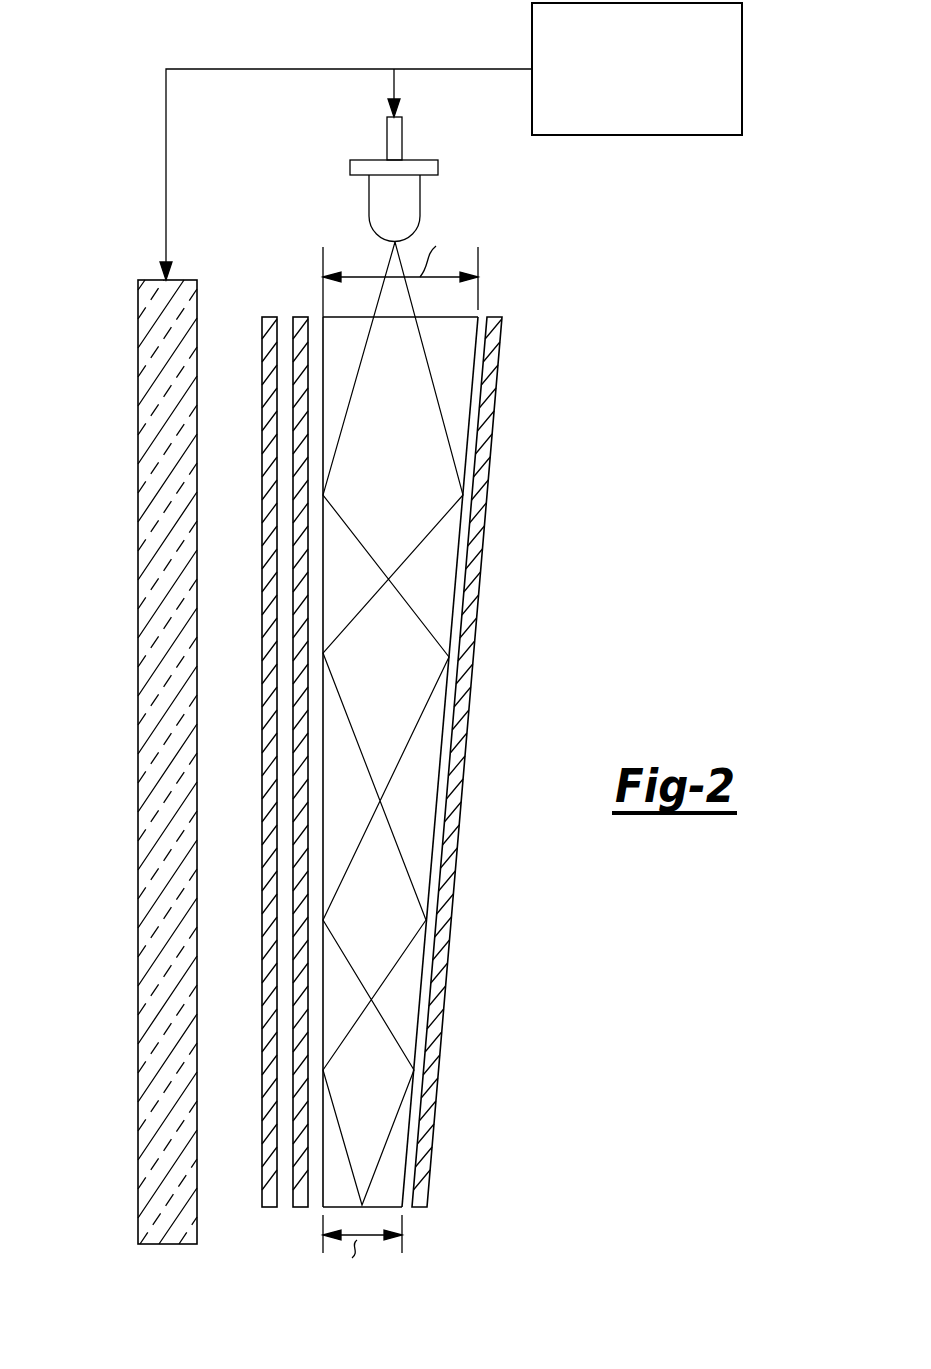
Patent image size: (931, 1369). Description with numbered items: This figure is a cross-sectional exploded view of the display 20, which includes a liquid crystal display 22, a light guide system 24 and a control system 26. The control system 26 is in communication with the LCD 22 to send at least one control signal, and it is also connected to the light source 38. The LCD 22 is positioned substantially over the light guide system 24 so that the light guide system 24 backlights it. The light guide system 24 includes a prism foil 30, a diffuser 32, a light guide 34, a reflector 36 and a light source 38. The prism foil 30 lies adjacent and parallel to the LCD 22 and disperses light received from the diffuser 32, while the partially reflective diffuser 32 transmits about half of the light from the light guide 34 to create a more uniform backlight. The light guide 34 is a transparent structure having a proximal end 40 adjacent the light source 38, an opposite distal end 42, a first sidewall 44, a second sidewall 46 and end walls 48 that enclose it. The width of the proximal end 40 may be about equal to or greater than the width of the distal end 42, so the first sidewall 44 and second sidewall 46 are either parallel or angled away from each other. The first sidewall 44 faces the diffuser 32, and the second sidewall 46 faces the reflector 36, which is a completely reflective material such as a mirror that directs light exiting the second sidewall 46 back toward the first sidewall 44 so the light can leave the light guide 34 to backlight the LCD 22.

The display 20 is at (590, 252).
The liquid crystal display 22 is at (138, 695).
The light guide system 24 is at (354, 774).
The control system 26 is at (742, 97).
The prism foil 30 is at (262, 787).
The diffuser 32 is at (300, 317).
The light guide 34 is at (450, 310).
The reflector 36 is at (497, 428).
The light source 38 is at (369, 200).
The proximal end 40 is at (403, 722).
The distal end 42 is at (402, 1207).
The first sidewall 44 is at (323, 537).
The second sidewall 46 is at (458, 558).
The end wall 48 is at (410, 670).